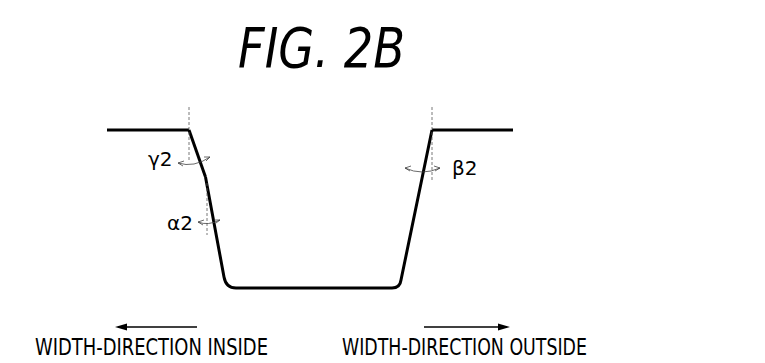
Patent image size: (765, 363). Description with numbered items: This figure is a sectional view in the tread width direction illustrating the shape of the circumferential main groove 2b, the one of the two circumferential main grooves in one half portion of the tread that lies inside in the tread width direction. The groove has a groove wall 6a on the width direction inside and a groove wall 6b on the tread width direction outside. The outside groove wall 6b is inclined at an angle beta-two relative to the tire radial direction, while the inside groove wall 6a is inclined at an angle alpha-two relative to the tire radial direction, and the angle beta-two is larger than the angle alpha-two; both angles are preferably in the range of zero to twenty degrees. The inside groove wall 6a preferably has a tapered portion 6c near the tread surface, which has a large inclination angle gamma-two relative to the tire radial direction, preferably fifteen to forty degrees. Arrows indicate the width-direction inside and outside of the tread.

The circumferential main groove 2b is at (324, 263).
The groove wall on the width direction inside 6a is at (218, 247).
The groove wall on the tread width direction outside 6b is at (409, 243).
The tapered portion 6c is at (195, 142).